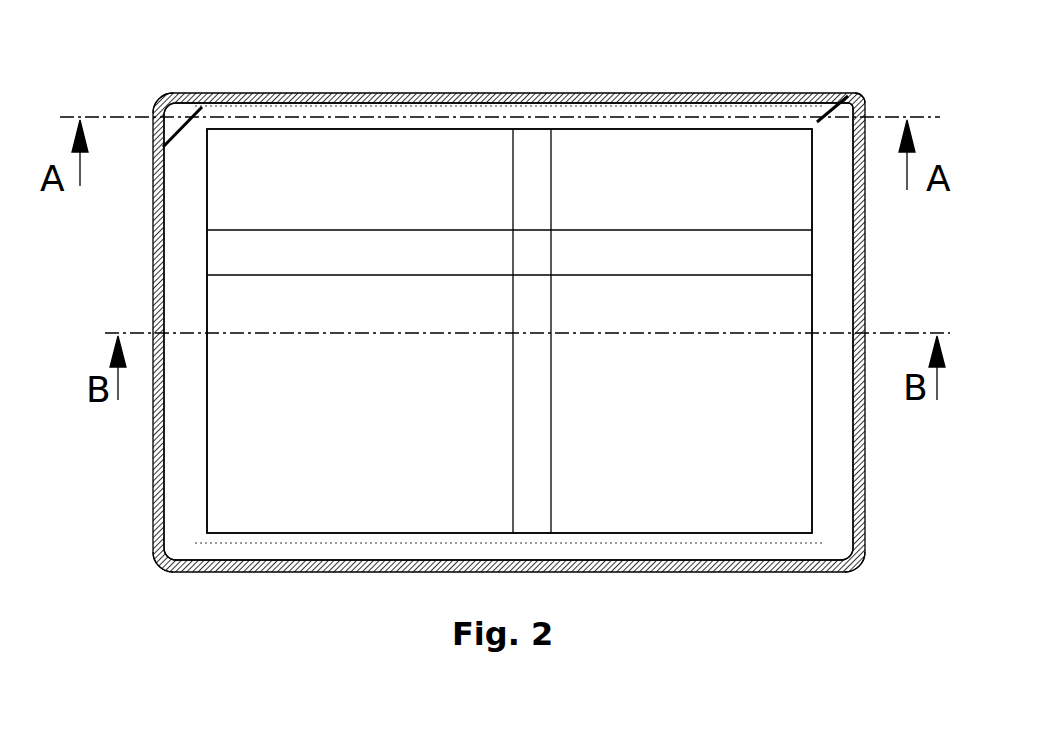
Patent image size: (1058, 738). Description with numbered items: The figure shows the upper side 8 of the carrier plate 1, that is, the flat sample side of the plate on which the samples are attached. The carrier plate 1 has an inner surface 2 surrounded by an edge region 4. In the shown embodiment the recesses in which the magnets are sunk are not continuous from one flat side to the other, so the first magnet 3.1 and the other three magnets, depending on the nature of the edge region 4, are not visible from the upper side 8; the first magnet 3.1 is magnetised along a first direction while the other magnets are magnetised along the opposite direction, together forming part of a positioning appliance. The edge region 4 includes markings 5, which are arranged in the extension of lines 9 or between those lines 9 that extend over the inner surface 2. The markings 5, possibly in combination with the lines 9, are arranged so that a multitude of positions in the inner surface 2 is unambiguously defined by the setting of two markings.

The carrier plate 1 is at (664, 60).
The inner surface 2 is at (768, 425).
The first magnet 3.1 is at (172, 116).
The edge region 4 is at (827, 231).
The markings 5 is at (277, 119).
The upper side 8 is at (428, 150).
The lines 9 is at (677, 228).